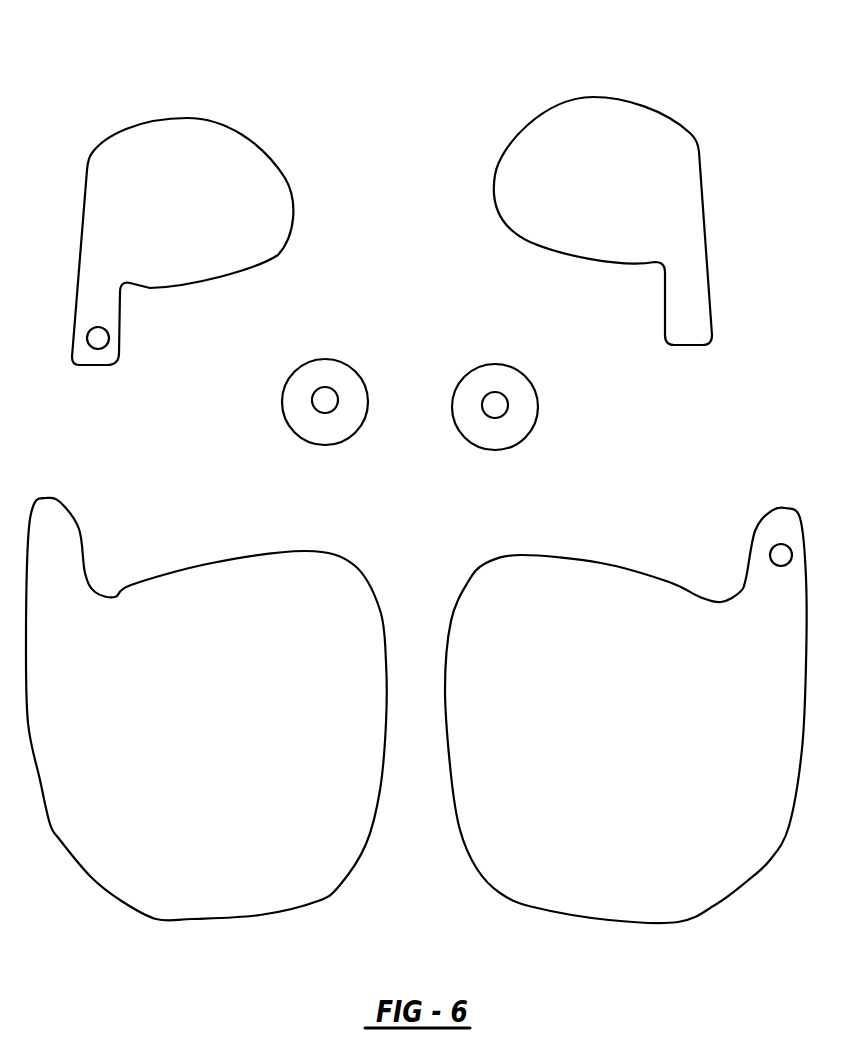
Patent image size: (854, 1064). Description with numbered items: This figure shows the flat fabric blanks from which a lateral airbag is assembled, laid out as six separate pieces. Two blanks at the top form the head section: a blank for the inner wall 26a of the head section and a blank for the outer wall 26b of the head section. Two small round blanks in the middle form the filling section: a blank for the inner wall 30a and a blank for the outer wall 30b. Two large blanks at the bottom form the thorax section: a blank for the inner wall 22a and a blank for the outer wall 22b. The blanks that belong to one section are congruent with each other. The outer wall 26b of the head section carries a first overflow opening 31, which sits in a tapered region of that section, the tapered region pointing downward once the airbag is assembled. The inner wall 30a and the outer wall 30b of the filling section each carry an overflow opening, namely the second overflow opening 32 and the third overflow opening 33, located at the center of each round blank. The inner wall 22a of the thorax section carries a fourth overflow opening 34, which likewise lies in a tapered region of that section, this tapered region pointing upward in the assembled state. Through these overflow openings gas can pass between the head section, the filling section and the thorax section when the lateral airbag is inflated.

The inner wall of the thorax section 22a is at (639, 897).
The outer wall of the thorax section 22b is at (291, 883).
The inner wall of the head section 26a is at (583, 128).
The outer wall of the head section 26b is at (255, 160).
The inner wall of the filling section 30a is at (493, 372).
The outer wall of the filling section 30b is at (325, 370).
The first overflow opening 31 is at (103, 340).
The second overflow opening 32 is at (493, 407).
The third overflow opening 33 is at (320, 398).
The fourth overflow opening 34 is at (781, 553).